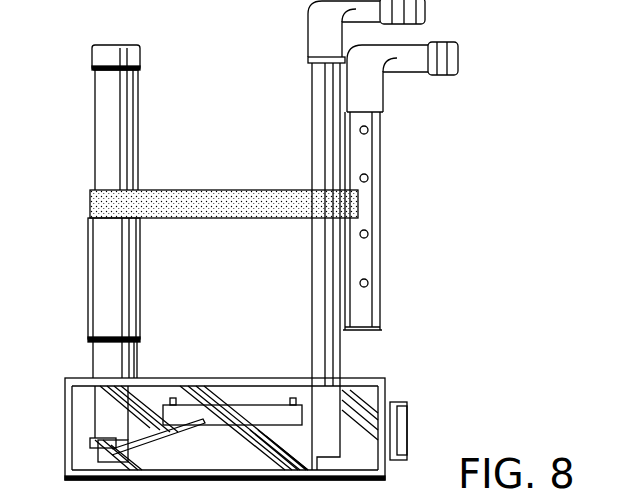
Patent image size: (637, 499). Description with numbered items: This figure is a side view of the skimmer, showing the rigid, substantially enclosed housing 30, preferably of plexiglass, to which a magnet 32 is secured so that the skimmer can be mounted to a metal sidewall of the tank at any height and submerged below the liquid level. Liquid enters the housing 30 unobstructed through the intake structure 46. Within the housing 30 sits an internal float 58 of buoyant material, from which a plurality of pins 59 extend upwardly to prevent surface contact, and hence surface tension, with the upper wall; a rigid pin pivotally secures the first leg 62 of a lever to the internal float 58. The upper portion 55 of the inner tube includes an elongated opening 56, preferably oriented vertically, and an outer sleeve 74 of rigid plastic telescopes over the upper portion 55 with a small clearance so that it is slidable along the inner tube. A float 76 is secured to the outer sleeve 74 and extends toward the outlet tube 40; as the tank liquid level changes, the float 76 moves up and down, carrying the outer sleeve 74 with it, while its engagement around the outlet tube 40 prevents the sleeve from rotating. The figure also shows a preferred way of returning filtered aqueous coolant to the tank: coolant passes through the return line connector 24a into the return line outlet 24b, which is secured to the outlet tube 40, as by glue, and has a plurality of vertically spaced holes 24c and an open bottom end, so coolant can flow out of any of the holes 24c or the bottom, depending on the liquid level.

The return line connector 24a is at (409, 77).
The return line outlet 24b is at (383, 176).
The holes 24c is at (368, 132).
The housing 30 is at (388, 378).
The magnet 32 is at (410, 423).
The outlet tube 40 is at (312, 128).
The intake structure 46 is at (86, 283).
The upper portion of the inner tube 55 is at (105, 357).
The elongated opening 56 is at (93, 120).
The internal float 58 is at (230, 405).
The pins 59 is at (173, 398).
The first leg 62 is at (150, 437).
The outer sleeve 74 is at (100, 313).
The float 76 is at (168, 190).